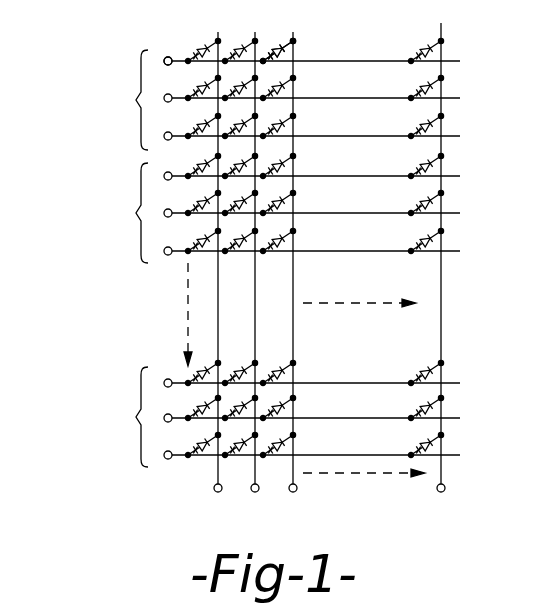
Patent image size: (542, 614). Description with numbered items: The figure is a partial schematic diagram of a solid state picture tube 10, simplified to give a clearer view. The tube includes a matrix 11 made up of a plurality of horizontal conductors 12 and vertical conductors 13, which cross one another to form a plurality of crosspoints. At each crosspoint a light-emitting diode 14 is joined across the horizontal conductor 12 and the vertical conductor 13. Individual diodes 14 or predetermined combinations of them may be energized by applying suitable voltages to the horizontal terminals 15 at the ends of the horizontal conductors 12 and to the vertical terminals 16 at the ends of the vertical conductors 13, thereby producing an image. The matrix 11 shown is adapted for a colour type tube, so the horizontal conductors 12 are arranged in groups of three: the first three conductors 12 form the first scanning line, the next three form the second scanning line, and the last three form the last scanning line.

The solid state picture tube 10 is at (503, 211).
The matrix 11 is at (462, 324).
The horizontal conductors 12 is at (454, 62).
The vertical conductors 13 is at (443, 31).
The light-emitting diode 14 is at (277, 47).
The horizontal terminals 15 is at (169, 57).
The vertical terminals 16 is at (448, 488).